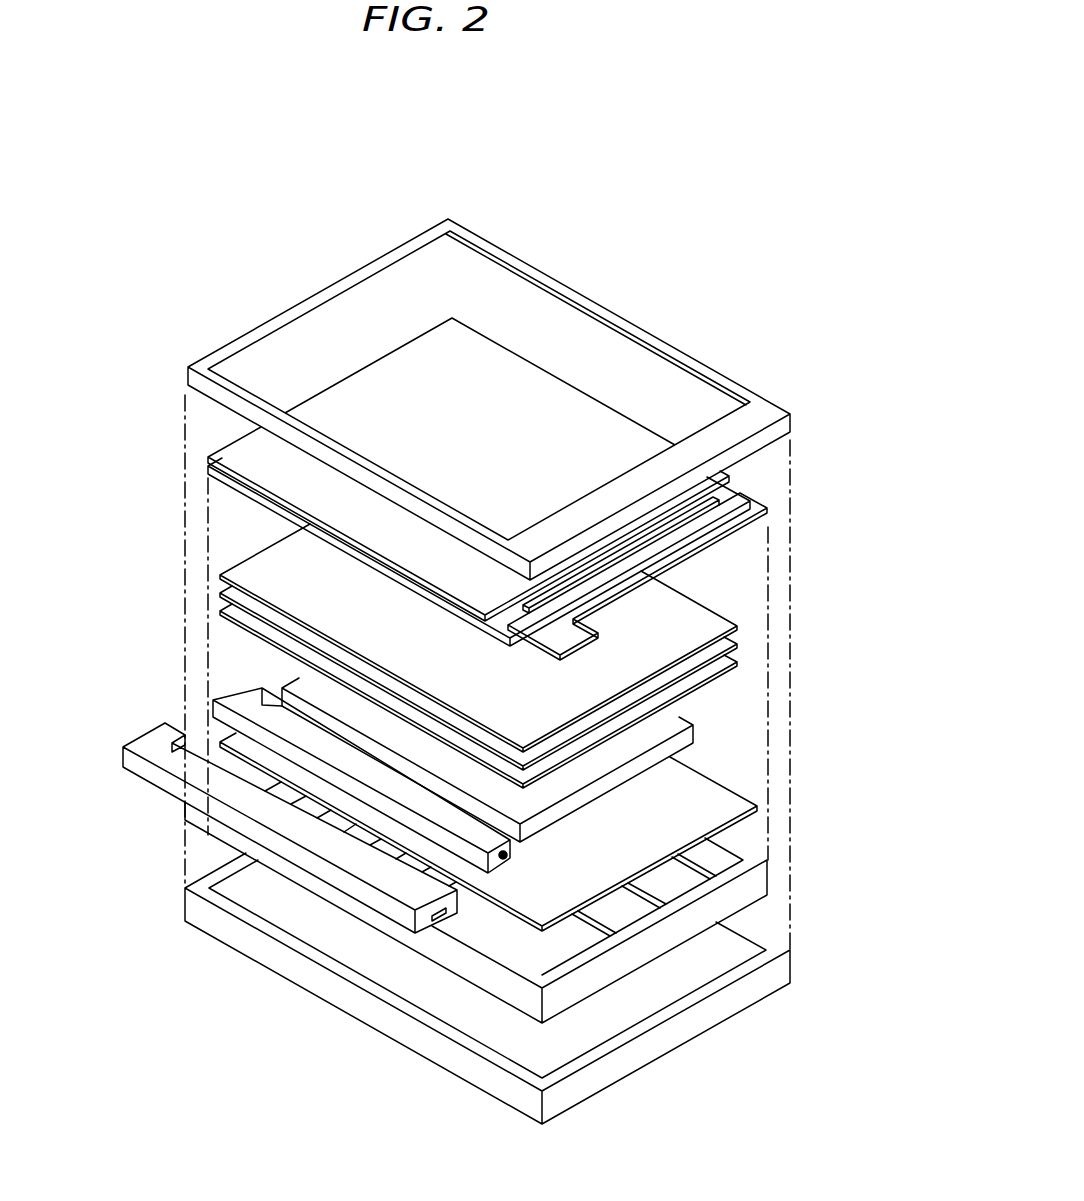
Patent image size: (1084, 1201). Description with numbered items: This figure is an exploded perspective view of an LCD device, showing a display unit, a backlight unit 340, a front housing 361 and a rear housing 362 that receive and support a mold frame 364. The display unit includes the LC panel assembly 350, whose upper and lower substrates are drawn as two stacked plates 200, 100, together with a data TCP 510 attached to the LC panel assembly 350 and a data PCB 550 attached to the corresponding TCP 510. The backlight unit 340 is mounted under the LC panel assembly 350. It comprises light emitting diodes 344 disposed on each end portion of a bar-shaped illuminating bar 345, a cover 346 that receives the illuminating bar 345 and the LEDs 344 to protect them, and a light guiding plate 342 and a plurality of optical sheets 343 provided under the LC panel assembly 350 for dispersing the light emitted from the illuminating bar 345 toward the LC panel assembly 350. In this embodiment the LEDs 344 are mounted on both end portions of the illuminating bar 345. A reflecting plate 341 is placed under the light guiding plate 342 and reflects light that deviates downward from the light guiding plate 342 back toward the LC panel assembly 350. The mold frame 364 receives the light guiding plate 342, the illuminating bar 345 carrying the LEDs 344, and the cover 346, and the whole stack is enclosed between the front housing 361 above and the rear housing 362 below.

The first substrate 100 is at (232, 488).
The second substrate 200 is at (248, 450).
The LC panel assembly 350 is at (108, 420).
The front housing 361 is at (598, 352).
The data TCP 510 is at (683, 525).
The data PCB 550 is at (667, 552).
The backlight unit 340 is at (896, 612).
The optical sheets 343 is at (795, 622).
The light guiding plate 342 is at (693, 736).
The reflecting plate 341 is at (713, 772).
The light emitting diodes 344 is at (506, 858).
The illuminating bar 345 is at (417, 827).
The cover 346 is at (347, 883).
The mold frame 364 is at (683, 921).
The rear housing 362 is at (660, 1037).